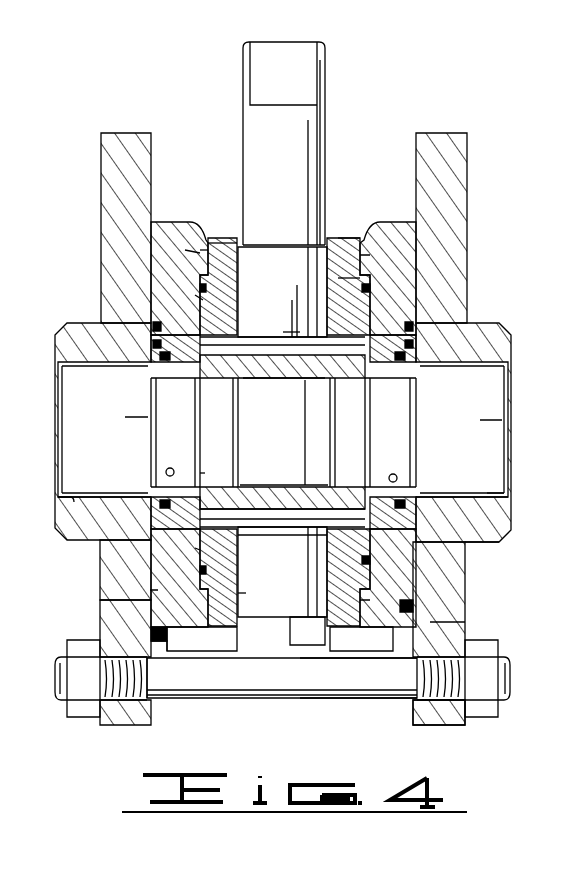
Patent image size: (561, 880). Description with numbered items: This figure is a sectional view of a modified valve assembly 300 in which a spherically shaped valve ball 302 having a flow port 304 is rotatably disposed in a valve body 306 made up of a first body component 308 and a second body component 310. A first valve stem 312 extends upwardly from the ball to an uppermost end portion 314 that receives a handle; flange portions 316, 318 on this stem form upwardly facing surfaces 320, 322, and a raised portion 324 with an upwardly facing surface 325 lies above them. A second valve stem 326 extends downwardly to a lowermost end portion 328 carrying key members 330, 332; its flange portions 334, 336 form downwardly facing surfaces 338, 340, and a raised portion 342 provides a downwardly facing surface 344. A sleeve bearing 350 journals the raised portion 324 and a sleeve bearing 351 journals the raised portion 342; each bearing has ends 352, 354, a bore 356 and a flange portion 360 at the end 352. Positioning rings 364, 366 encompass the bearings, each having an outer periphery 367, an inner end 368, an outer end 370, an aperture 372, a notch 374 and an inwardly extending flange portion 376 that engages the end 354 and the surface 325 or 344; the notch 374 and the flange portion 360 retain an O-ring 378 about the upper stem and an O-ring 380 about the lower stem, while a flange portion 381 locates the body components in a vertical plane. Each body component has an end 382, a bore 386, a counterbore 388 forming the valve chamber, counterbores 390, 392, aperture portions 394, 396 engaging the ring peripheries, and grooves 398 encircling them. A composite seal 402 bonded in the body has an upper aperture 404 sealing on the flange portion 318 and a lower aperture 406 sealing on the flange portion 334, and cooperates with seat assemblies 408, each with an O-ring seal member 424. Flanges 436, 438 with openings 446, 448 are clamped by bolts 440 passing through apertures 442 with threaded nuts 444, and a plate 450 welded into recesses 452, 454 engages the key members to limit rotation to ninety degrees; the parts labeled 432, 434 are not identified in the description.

The valve assembly 300 is at (372, 110).
The valve member 302 is at (243, 520).
The flow port 304 is at (262, 490).
The valve body 306 is at (178, 213).
The first body component 308 is at (150, 573).
The second body component 310 is at (466, 575).
The first valve stem 312 is at (243, 120).
The uppermost end portion 314 is at (327, 57).
The flange portion 316 is at (292, 335).
The flange portion 318 is at (283, 332).
The upwardly facing surface 320 is at (297, 332).
The upwardly facing surface 322 is at (288, 397).
The raised portion 324 is at (262, 258).
The upwardly facing surface 325 is at (302, 242).
The second valve stem 326 is at (322, 612).
The lowermost end portion 328 is at (282, 670).
The key member 330 is at (263, 627).
The key member 332 is at (300, 612).
The flange portion 334 is at (305, 520).
The flange portion 336 is at (247, 528).
The downwardly facing surface 338 is at (297, 547).
The downwardly facing surface 340 is at (302, 577).
The raised portion 342 is at (160, 637).
The downwardly facing surface 344 is at (240, 703).
The sleeve bearing 350 is at (338, 278).
The sleeve bearing 351 is at (467, 553).
The end 352 is at (233, 520).
The end 354 is at (260, 622).
The bore 356 is at (200, 605).
The flange portion 360 is at (200, 550).
The positioning ring 364 is at (215, 238).
The positioning ring 366 is at (413, 608).
The outer periphery 367 is at (368, 605).
The inner end 368 is at (420, 472).
The outer end 370 is at (341, 632).
The aperture 372 is at (362, 545).
The notch 374 is at (420, 525).
The inwardly extending flange portion 376 is at (322, 618).
The O-ring 378 is at (150, 387).
The O-ring 380 is at (200, 473).
The flange portion 381 is at (150, 590).
The end 382 is at (445, 597).
The bore 386 is at (150, 340).
The counterbore 388 is at (150, 530).
The counterbore 390 is at (150, 312).
The counterbore 392 is at (155, 300).
The aperture portion 394 is at (203, 250).
The aperture portion 396 is at (238, 593).
The grooves 398 is at (364, 560).
The composite seal 402 is at (418, 492).
The upper aperture 404 is at (293, 380).
The lower aperture 406 is at (312, 475).
The seat assemblies 408 is at (398, 476).
The O-ring seal member 424 is at (418, 510).
The bolt 432 is at (153, 720).
The bolt 434 is at (407, 727).
The flange 436 is at (113, 720).
The flange 438 is at (462, 723).
The bolts 440 is at (160, 687).
The apertures 442 is at (447, 670).
The threaded nuts 444 is at (487, 710).
The opening 446 is at (70, 497).
The opening 448 is at (487, 497).
The plate 450 is at (297, 670).
The recess 452 is at (165, 640).
The recess 454 is at (462, 622).